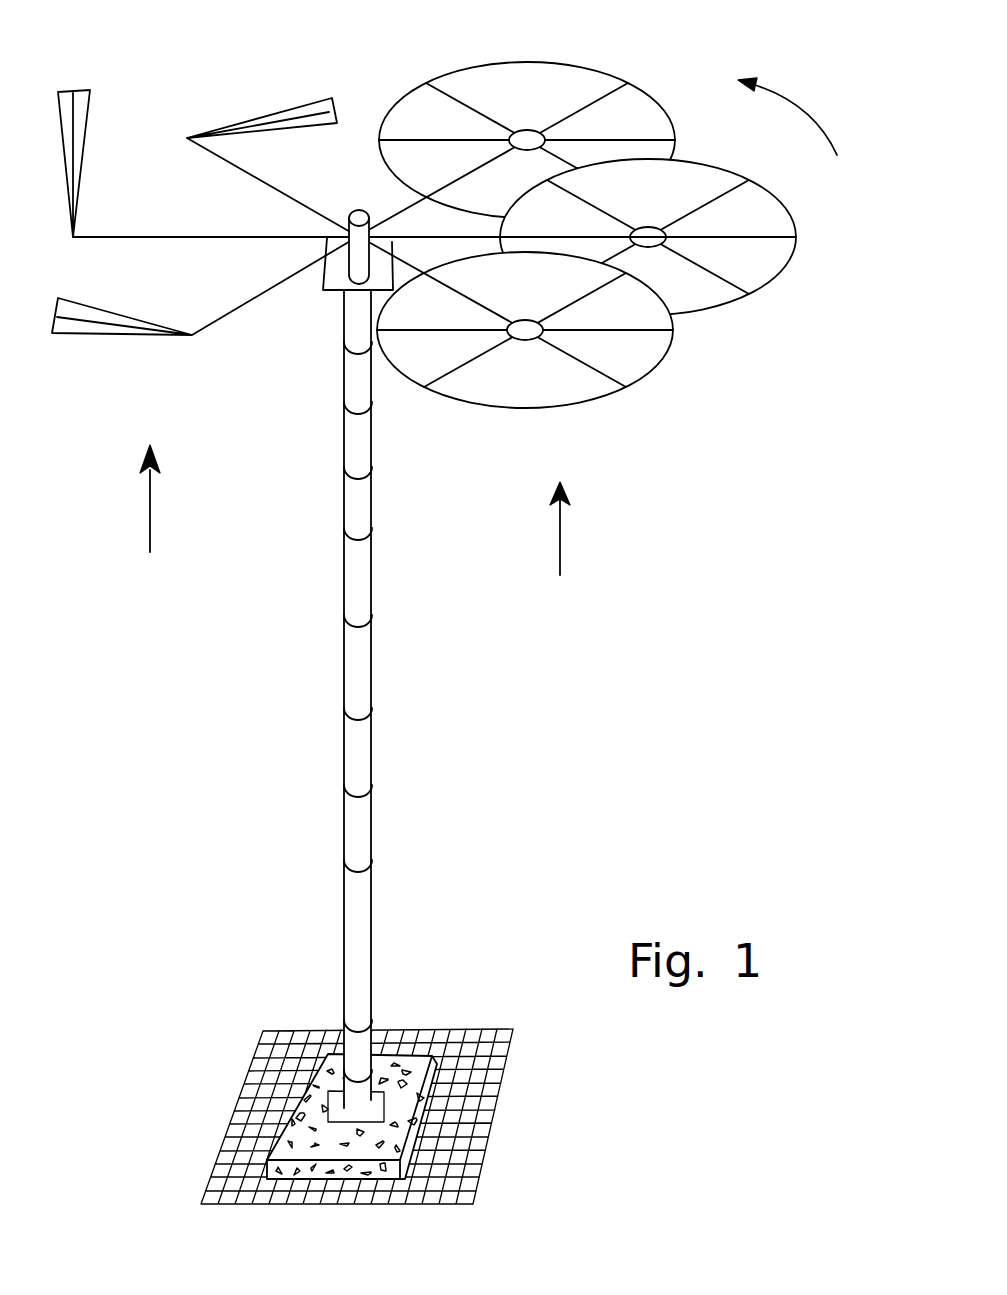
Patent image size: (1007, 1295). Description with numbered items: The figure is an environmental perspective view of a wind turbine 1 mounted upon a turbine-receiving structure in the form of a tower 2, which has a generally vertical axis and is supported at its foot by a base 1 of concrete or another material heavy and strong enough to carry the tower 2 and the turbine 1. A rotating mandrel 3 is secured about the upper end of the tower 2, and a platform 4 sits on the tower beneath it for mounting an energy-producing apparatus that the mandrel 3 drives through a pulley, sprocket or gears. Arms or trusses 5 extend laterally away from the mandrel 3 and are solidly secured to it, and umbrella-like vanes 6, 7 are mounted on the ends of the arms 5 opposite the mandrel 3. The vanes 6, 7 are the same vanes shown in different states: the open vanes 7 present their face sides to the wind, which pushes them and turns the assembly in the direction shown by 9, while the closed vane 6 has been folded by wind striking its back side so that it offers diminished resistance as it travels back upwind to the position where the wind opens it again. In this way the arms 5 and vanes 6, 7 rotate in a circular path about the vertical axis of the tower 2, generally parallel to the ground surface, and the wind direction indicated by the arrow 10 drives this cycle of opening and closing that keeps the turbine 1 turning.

The wind turbine 1 is at (287, 1117).
The tower 2 is at (372, 797).
The rotating mandrel 3 is at (358, 208).
The platform 4 is at (324, 298).
The arms or trusses 5 is at (211, 232).
The umbrella-like vane in closed position 6 is at (88, 162).
The umbrella-like vane in open position 7 is at (571, 64).
The direction of rotation 9 is at (803, 104).
The wind direction arrow 10 is at (552, 545).